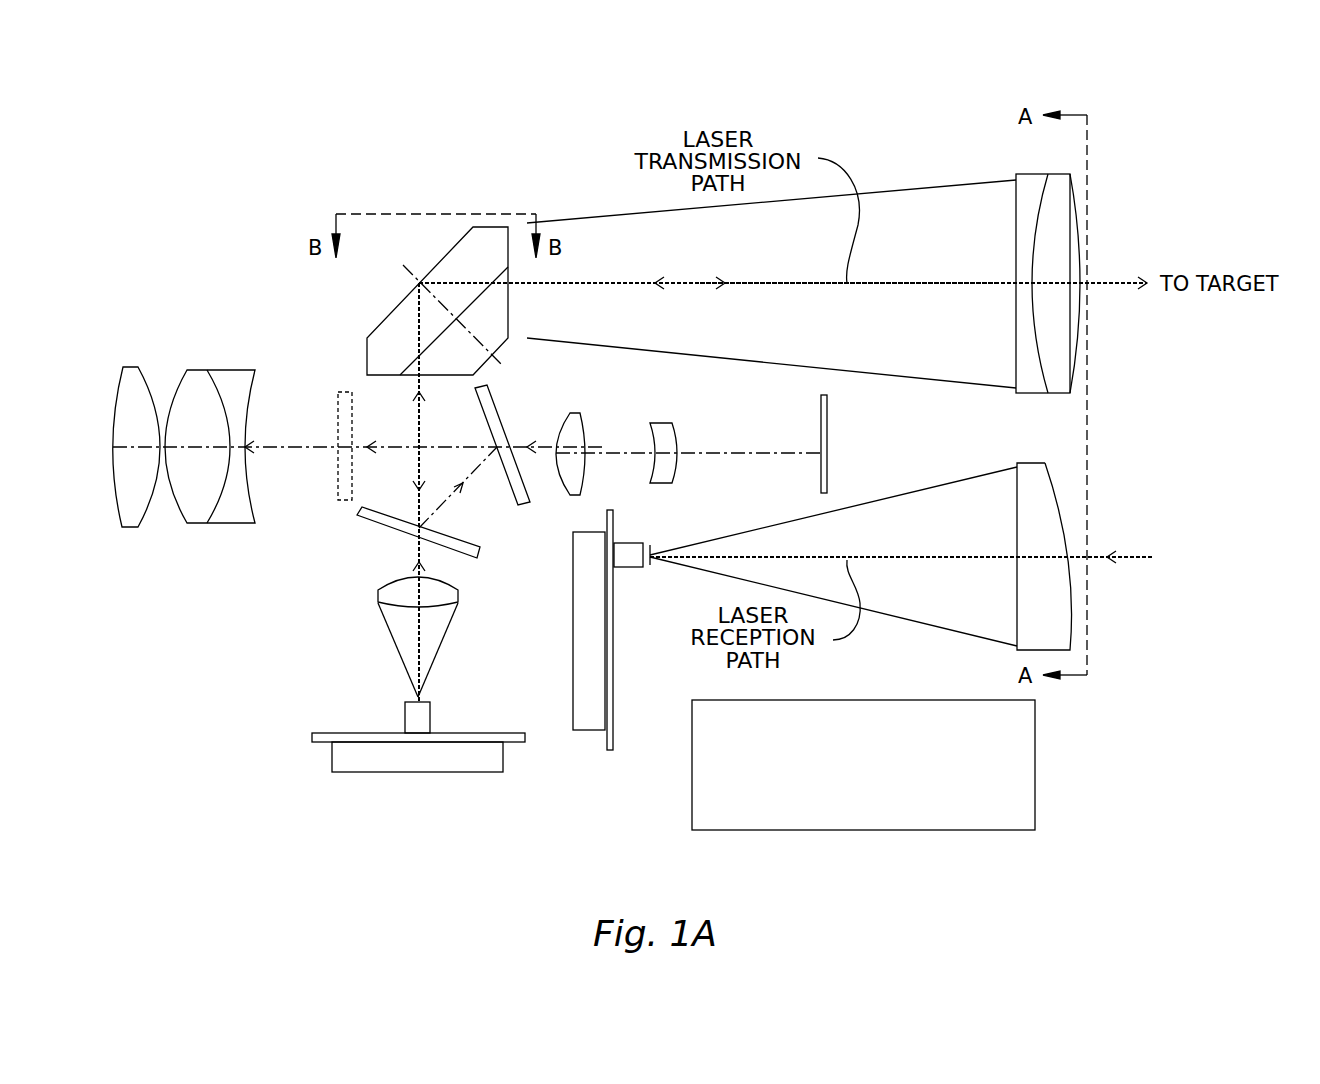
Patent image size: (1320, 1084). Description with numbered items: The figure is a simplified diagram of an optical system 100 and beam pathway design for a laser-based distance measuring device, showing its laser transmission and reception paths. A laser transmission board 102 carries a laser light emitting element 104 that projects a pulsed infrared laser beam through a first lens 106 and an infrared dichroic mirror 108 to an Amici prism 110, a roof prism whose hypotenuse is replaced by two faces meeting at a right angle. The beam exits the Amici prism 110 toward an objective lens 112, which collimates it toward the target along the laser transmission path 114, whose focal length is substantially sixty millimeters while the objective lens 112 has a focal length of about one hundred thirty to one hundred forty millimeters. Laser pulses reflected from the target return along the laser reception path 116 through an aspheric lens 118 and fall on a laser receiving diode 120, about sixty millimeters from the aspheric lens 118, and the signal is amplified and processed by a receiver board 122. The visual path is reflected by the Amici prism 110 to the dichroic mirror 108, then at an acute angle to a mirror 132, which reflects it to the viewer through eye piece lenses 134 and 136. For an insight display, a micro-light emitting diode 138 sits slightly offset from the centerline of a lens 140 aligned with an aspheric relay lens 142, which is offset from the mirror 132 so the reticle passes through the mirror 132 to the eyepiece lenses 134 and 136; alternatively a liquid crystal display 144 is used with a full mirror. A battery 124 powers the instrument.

The optical system 100 is at (208, 685).
The laser transmission board 102 is at (503, 760).
The laser light emitting element 104 is at (432, 705).
The first lens 106 is at (458, 593).
The infrared dichroic mirror 108 is at (463, 520).
The Amici prism 110 is at (398, 304).
The objective lens 112 is at (1060, 174).
The laser transmission path 114 is at (913, 283).
The laser reception path 116 is at (945, 556).
The aspheric lens 118 is at (1032, 463).
The laser receiving diode 120 is at (648, 545).
The receiver board 122 is at (590, 730).
The battery 124 is at (1038, 805).
The mirror 132 is at (503, 390).
The eye piece lens 134 is at (197, 370).
The eye piece lens 136 is at (130, 367).
The micro-light emitting diode 138 is at (828, 422).
The lens 140 is at (663, 423).
The aspheric relay lens 142 is at (575, 413).
The liquid crystal display 144 is at (343, 502).